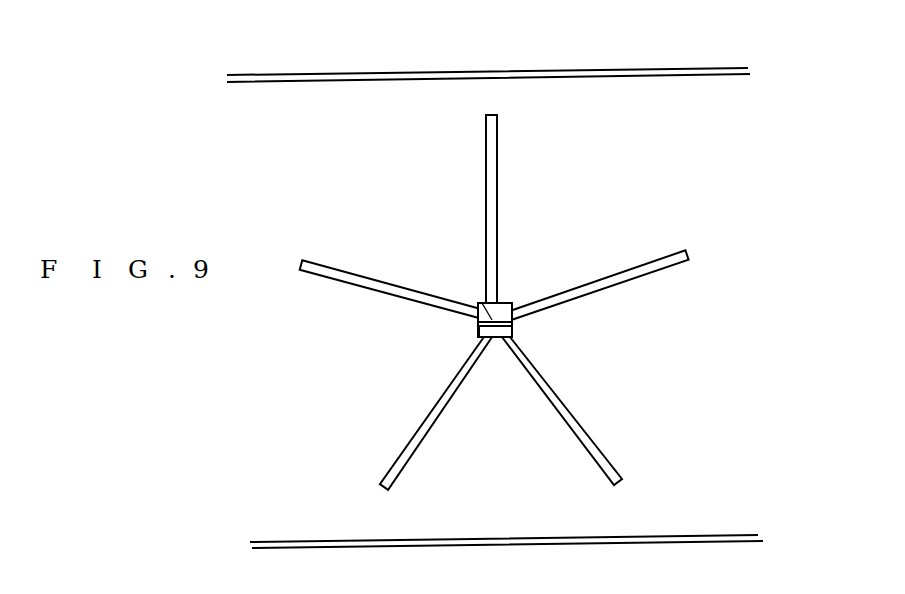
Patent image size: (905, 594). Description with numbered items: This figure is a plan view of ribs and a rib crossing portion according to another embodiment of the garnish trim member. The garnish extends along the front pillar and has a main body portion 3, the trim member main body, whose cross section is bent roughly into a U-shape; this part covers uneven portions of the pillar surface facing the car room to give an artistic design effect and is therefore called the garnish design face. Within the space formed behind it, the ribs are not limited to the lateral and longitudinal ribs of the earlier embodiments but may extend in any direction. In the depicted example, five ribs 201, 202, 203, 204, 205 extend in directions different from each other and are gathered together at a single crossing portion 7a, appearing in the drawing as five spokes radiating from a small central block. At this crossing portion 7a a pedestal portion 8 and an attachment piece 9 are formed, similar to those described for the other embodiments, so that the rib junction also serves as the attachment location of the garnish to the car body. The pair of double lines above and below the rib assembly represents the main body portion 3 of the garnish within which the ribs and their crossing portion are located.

The main body portion 3 is at (302, 105).
The pedestal portion 8 is at (513, 330).
The attachment piece 9 is at (482, 304).
The crossing portion 7a is at (475, 331).
The rib 201 is at (497, 175).
The rib 202 is at (358, 282).
The rib 203 is at (425, 435).
The rib 204 is at (582, 425).
The rib 205 is at (632, 275).